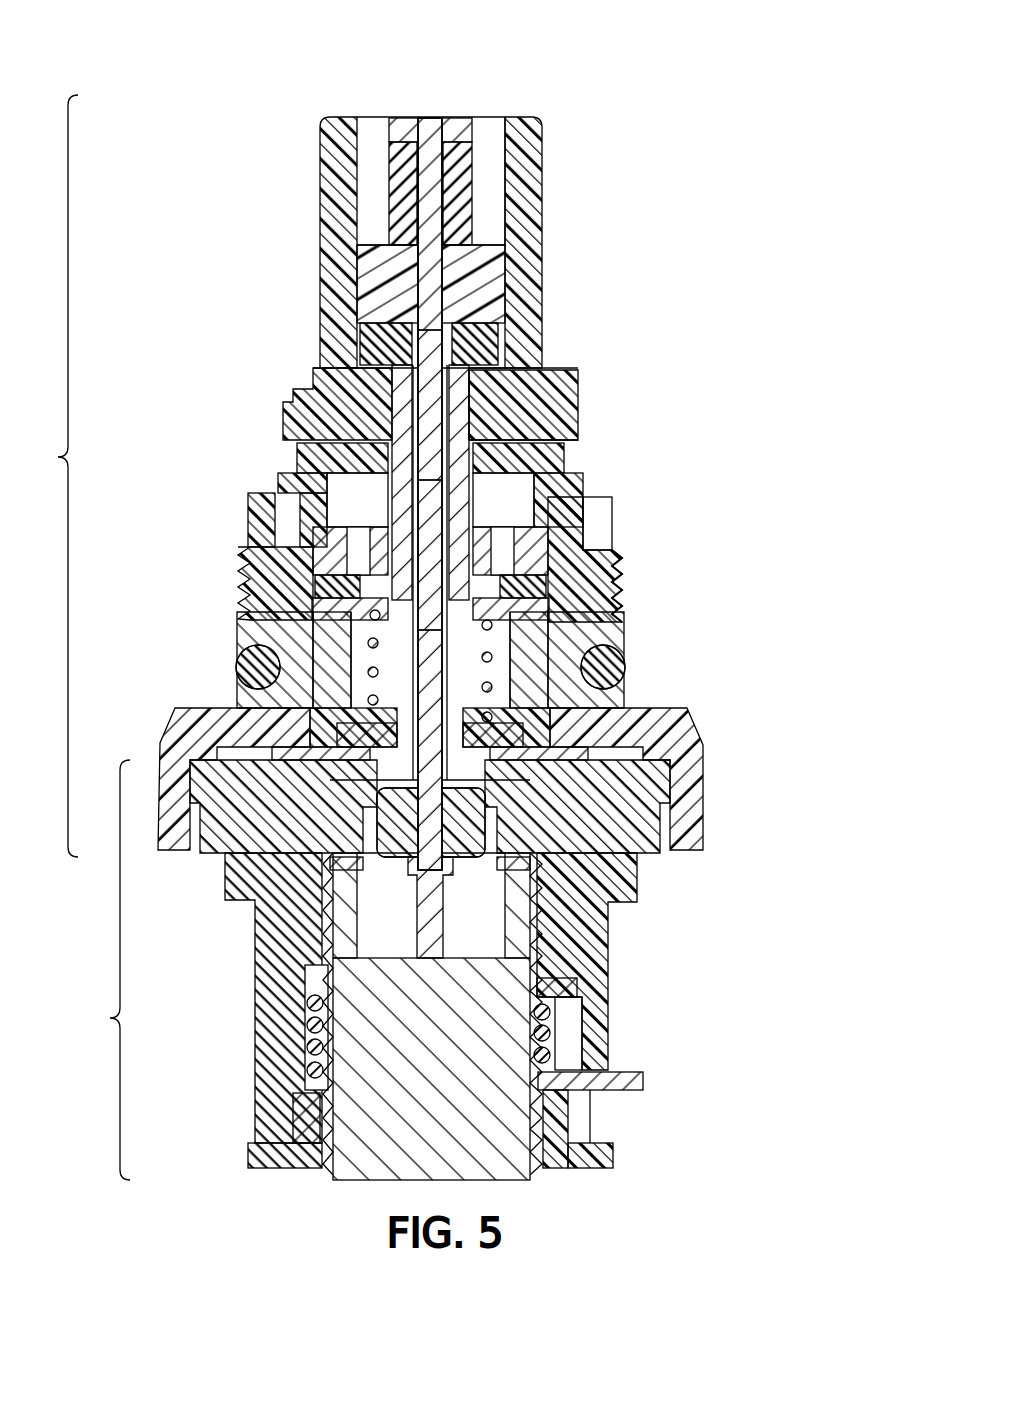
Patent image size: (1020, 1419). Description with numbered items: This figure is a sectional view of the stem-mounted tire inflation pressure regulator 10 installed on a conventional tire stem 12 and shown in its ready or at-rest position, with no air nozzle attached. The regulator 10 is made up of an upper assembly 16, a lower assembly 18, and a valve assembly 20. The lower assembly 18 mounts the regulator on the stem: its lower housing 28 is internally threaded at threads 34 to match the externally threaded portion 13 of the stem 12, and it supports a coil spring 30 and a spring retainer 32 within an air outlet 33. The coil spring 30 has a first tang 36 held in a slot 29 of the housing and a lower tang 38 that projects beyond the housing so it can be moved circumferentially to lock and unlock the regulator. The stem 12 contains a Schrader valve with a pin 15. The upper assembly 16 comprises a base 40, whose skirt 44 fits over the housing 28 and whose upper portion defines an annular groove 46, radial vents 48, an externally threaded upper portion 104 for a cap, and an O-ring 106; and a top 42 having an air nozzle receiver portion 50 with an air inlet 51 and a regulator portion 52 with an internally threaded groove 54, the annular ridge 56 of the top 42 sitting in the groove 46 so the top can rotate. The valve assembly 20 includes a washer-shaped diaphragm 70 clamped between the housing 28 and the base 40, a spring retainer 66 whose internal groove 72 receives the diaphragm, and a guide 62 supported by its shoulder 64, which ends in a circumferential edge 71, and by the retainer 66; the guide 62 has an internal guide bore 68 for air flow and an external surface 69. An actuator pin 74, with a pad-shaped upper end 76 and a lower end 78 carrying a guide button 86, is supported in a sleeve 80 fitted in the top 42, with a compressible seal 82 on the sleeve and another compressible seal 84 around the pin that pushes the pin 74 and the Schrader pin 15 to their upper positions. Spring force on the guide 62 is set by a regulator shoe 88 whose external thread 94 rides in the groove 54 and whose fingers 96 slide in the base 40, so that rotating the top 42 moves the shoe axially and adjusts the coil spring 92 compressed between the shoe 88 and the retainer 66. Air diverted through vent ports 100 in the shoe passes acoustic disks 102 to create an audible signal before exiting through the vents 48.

The stem-mounted tire inflation pressure regulator 10 is at (760, 205).
The tire stem 12 is at (530, 1178).
The externally threaded portion 13 is at (330, 1150).
The pin 15 is at (445, 900).
The upper assembly 16 is at (51, 476).
The lower assembly 18 is at (101, 970).
The valve assembly 20 is at (525, 690).
The lower housing 28 is at (610, 940).
The slot 29 is at (570, 1045).
The coil spring 30 is at (545, 1040).
The spring retainer 32 is at (612, 1158).
The air outlet 33 is at (310, 985).
The internal threads 34 is at (520, 920).
The first tang 36 is at (560, 988).
The lower tang 38 is at (645, 1082).
The base 40 is at (704, 725).
The top 42 is at (580, 368).
The skirt 44 is at (690, 800).
The annular groove 46 is at (560, 520).
The vents 48 is at (590, 625).
The air nozzle receiver portion 50 is at (522, 178).
The air inlet 51 is at (495, 140).
The regulator portion 52 is at (545, 425).
The internally threaded groove 54 is at (312, 455).
The annular ridge 56 is at (262, 545).
The guide 62 is at (520, 395).
The shoulder 64 is at (560, 372).
The spring retainer 66 is at (560, 755).
The internal guide bore 68 is at (394, 405).
The external surface 69 is at (412, 430).
The diaphragm 70 is at (300, 752).
The circumferential edge 71 is at (515, 378).
The internal groove 72 is at (365, 745).
The actuator pin 74 is at (428, 245).
The upper end 76 is at (405, 130).
The lower end 78 is at (363, 865).
The sleeve 80 is at (380, 270).
The compressible seal 82 is at (368, 338).
The compressible seal 84 is at (463, 197).
The guide button 86 is at (470, 830).
The regulator shoe 88 is at (540, 533).
The coil spring 92 is at (372, 660).
The external thread 94 is at (300, 470).
The fingers 96 is at (330, 588).
The vent ports 100 is at (350, 545).
The acoustic disks 102 is at (600, 660).
The externally threaded upper portion 104 is at (617, 600).
The O-ring 106 is at (245, 660).